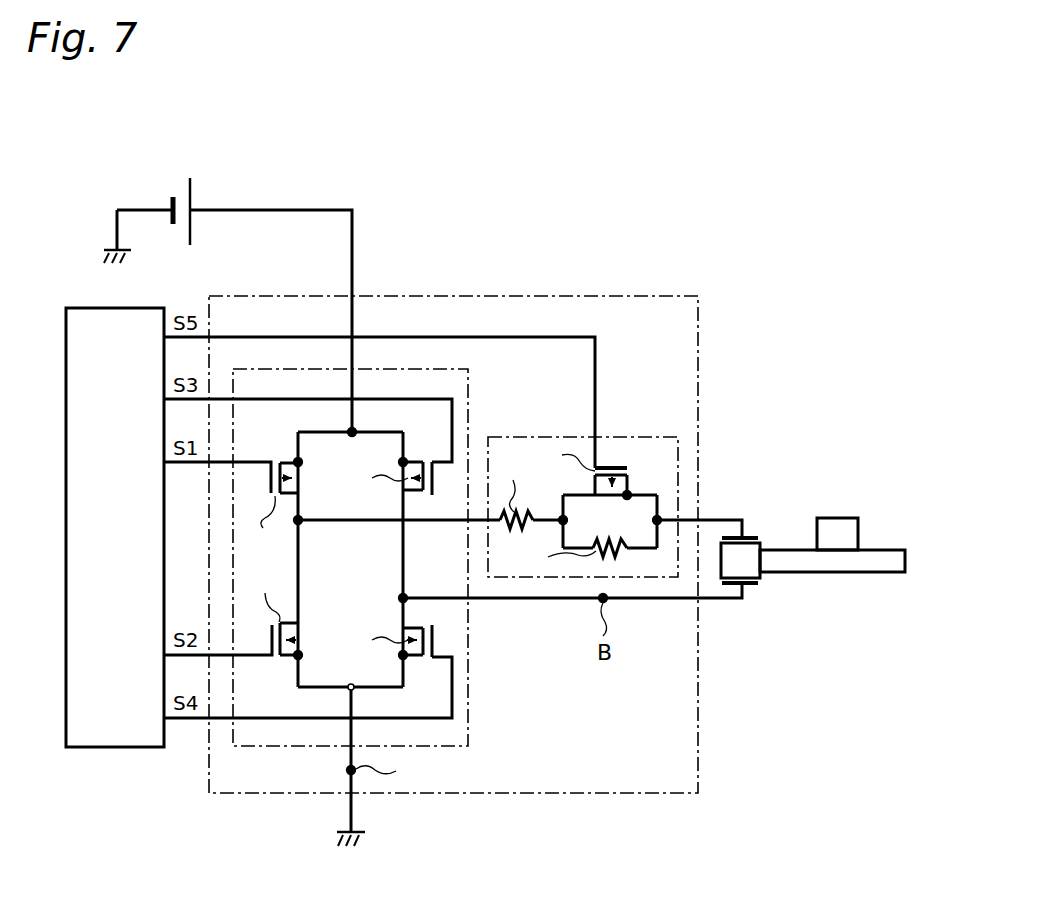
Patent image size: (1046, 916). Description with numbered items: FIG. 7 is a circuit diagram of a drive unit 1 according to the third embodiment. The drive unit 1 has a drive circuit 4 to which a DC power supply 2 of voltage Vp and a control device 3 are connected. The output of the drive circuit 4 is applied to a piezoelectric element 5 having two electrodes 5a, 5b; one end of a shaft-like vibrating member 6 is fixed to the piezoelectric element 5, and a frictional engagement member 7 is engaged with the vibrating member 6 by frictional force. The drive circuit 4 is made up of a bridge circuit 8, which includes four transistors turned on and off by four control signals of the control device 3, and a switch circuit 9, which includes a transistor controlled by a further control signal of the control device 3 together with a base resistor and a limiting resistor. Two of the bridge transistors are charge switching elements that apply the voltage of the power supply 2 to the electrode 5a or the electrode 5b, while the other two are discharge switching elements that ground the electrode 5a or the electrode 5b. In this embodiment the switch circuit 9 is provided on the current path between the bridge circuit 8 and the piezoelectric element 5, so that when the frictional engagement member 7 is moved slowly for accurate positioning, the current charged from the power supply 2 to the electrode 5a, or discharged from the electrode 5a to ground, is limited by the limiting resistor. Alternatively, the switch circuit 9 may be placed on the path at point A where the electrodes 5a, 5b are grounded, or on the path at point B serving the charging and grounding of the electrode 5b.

The drive unit 1 is at (305, 178).
The DC power supply 2 is at (190, 178).
The control device 3 is at (120, 748).
The drive circuit 4 is at (474, 290).
The piezoelectric element 5 is at (761, 556).
The electrode 5a is at (751, 536).
The electrode 5b is at (751, 584).
The vibrating member 6 is at (835, 573).
The frictional engagement member 7 is at (845, 518).
The bridge circuit 8 is at (476, 680).
The switch circuit 9 is at (638, 432).